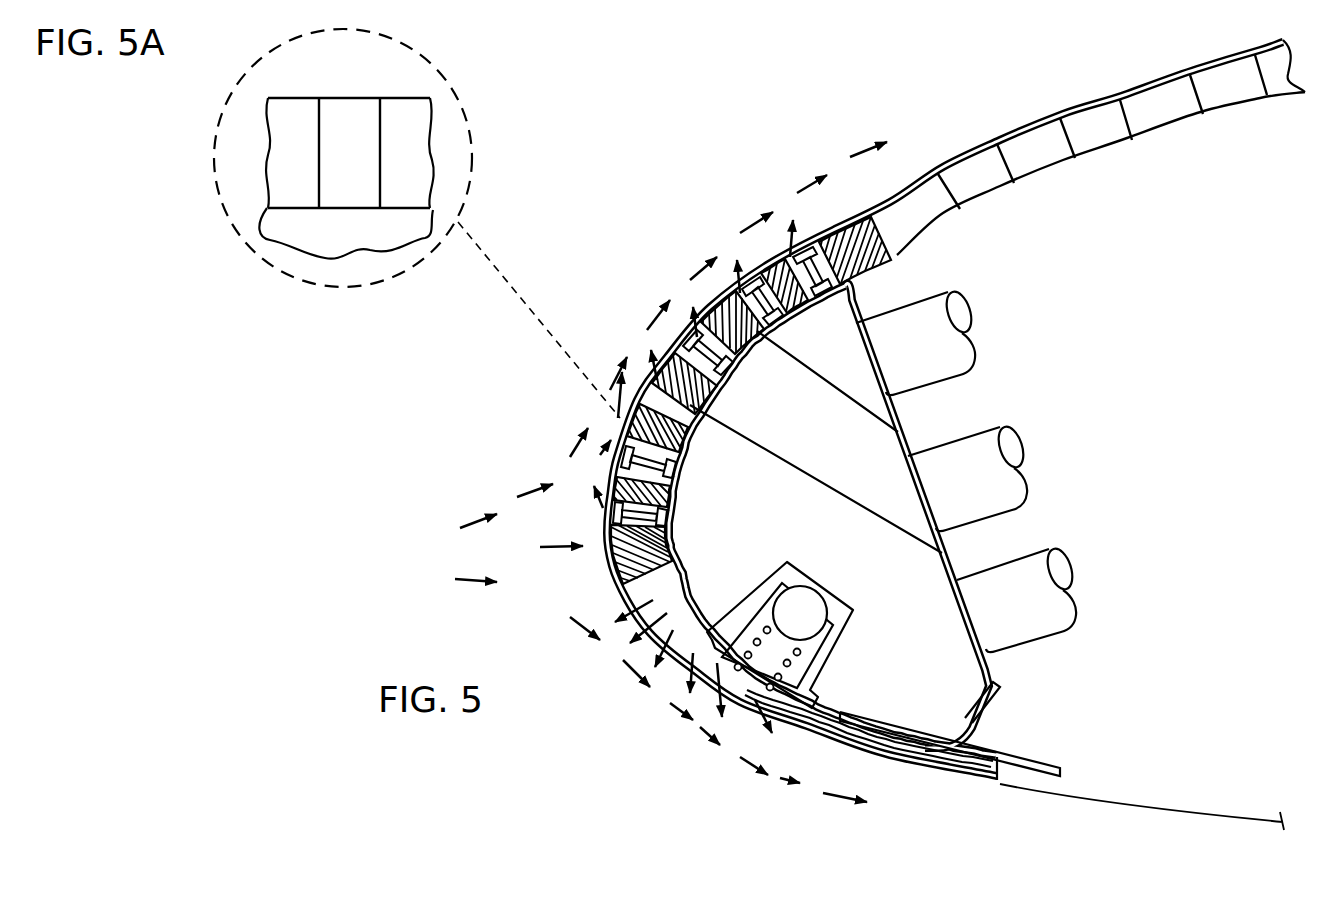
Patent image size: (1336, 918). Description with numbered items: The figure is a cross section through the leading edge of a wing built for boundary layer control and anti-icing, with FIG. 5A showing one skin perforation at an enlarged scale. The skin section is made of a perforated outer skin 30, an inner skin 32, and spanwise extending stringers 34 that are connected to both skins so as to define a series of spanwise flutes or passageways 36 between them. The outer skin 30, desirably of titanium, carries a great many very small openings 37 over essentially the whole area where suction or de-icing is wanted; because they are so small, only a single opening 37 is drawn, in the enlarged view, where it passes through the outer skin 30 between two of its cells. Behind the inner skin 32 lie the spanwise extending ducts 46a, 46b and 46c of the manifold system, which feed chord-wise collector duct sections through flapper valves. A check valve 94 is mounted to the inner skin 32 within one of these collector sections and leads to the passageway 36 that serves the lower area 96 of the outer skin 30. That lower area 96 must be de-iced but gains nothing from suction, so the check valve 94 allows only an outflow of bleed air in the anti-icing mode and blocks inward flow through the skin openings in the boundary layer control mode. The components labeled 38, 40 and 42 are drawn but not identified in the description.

In FIG. 5A, the outer skin 30 is at (310, 77).
In FIG. 5, the outer skin 30 is at (1173, 74).
In FIG. 5, the inner skin 32 is at (1180, 122).
In FIG. 5, the stringers 34 is at (845, 227).
In FIG. 5, the flutes or passageways 36 is at (728, 290).
In FIG. 5A, the openings 37 is at (360, 117).
In FIG. 5, the leading edge nose segment 38 is at (610, 550).
In FIG. 5, the upper skin panel 40 is at (1015, 132).
In FIG. 5, the lower skin strip 42 is at (980, 783).
In FIG. 5, the spanwise duct 46a is at (1065, 565).
In FIG. 5, the spanwise duct 46b is at (1020, 468).
In FIG. 5, the spanwise duct 46c is at (965, 302).
In FIG. 5, the check valve 94 is at (830, 597).
In FIG. 5, the lower area 96 is at (672, 650).